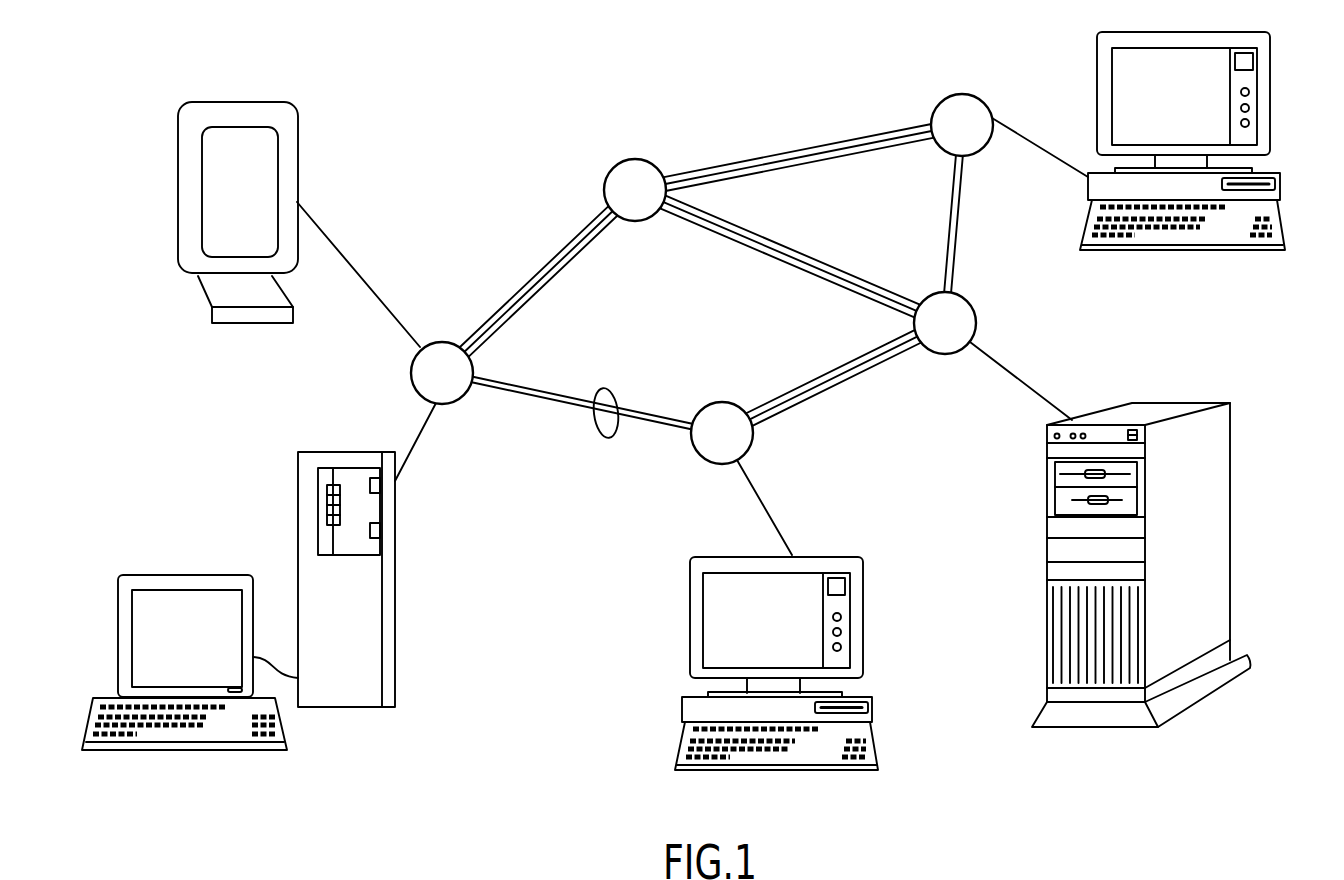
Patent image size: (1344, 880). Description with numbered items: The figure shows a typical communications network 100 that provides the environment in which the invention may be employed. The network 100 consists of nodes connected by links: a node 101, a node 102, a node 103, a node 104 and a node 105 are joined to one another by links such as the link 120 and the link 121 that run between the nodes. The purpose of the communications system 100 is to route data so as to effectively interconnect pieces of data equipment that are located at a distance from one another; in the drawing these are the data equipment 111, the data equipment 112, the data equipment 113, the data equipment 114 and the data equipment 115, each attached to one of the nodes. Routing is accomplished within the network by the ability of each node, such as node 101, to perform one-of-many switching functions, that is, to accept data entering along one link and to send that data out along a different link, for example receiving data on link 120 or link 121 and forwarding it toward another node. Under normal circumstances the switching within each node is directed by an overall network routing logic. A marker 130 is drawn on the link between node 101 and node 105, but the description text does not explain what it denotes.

The communications network 100 is at (672, 315).
The node 101 is at (436, 342).
The node 102 is at (630, 158).
The node 103 is at (944, 95).
The node 104 is at (976, 322).
The node 105 is at (707, 403).
The data equipment 111 is at (298, 118).
The data equipment 112 is at (187, 574).
The data equipment 113 is at (690, 618).
The data equipment 114 is at (1230, 448).
The data equipment 115 is at (1195, 251).
The link 120 is at (540, 406).
The link 121 is at (505, 383).
The link fault indication 130 is at (604, 438).